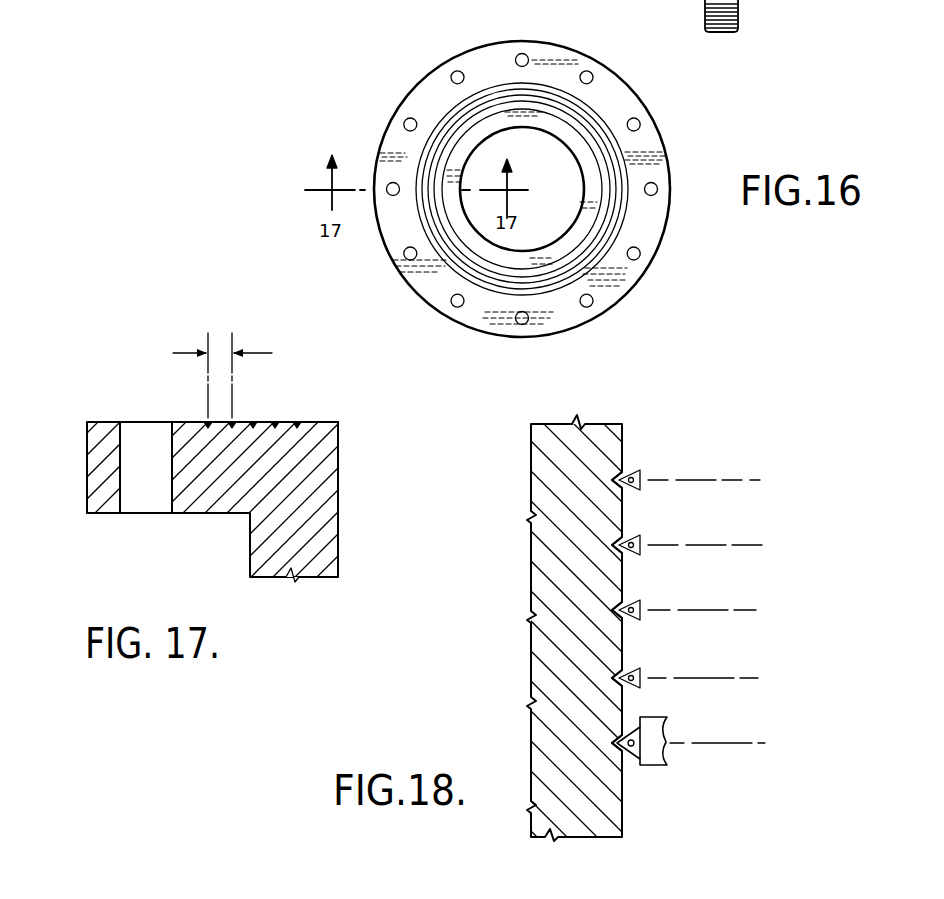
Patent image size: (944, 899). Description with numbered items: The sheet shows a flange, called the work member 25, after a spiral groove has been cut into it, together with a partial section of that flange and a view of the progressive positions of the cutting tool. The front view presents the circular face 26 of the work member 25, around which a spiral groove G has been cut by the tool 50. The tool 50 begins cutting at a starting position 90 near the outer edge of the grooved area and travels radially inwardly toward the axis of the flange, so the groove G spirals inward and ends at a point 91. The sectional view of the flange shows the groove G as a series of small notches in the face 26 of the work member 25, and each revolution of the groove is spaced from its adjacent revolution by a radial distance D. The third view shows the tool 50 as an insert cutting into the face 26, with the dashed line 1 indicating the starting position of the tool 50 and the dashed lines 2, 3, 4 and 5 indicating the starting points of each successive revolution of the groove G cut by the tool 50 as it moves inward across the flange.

In FIG. 16, the work member 25 is at (403, 97).
In FIG. 17, the work member 25 is at (342, 557).
In FIG. 16, the face 26 is at (643, 138).
In FIG. 17, the face 26 is at (192, 421).
In FIG. 18, the face 26 is at (622, 812).
In FIG. 16, the spiral groove G is at (625, 218).
In FIG. 17, the spiral groove G is at (298, 421).
In FIG. 18, the spiral groove G is at (617, 478).
In FIG. 16, the starting position 90 is at (529, 80).
In FIG. 16, the end point of groove 91 is at (526, 266).
In FIG. 17, the radial distance D is at (222, 363).
In FIG. 18, the tool 50 is at (633, 471).
In FIG. 18, the dashed line 1 is at (712, 479).
In FIG. 18, the dashed line 2 is at (713, 544).
In FIG. 18, the dashed line 3 is at (713, 609).
In FIG. 18, the dashed line 4 is at (713, 677).
In FIG. 18, the dashed line 5 is at (728, 742).